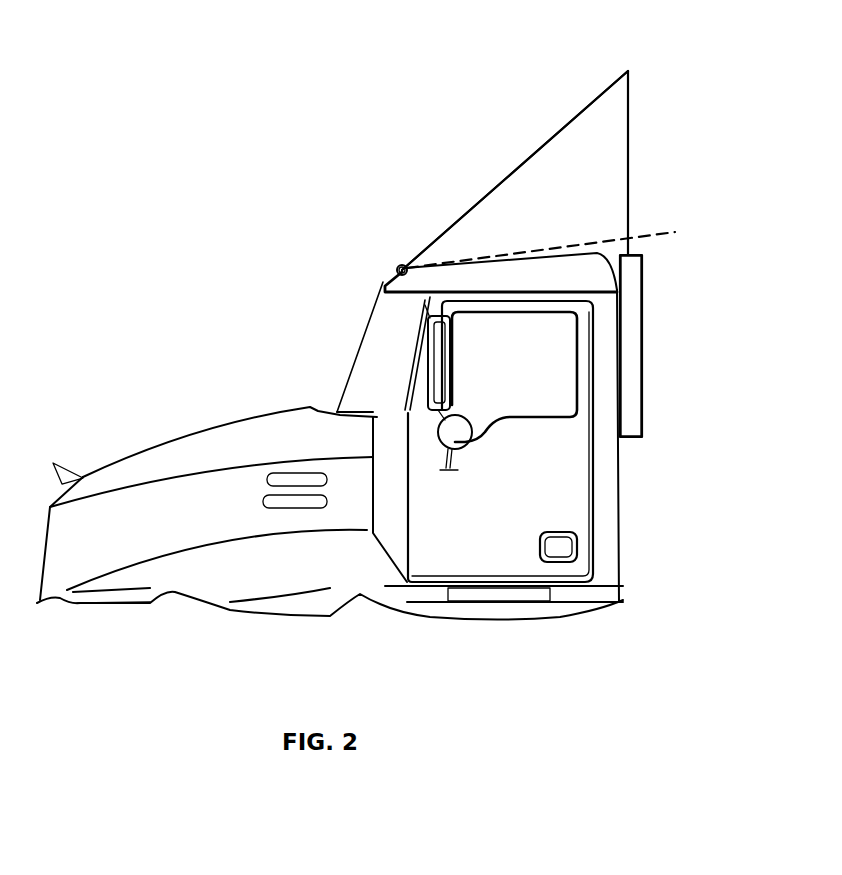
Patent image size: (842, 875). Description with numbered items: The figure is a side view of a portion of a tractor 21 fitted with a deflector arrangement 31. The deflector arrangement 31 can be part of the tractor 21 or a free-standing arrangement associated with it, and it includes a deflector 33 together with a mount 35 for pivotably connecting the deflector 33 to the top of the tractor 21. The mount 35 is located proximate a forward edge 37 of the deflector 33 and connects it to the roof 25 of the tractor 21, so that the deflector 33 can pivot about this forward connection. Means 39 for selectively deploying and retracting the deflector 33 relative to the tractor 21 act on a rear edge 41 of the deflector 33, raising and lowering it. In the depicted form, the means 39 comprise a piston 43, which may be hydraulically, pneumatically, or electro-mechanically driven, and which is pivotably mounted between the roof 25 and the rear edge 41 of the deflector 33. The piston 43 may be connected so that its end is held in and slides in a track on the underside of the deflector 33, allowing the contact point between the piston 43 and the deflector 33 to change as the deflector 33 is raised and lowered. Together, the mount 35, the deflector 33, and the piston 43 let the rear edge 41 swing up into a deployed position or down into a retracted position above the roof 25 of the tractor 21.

The tractor 21 is at (205, 433).
The roof 25 is at (584, 248).
The deflector arrangement 31 is at (478, 203).
The deflector 33 is at (563, 125).
The mount 35 is at (398, 266).
The forward edge 37 is at (411, 263).
The means for selectively deploying and retracting 39 is at (642, 327).
The rear edge 41 is at (627, 70).
The piston 43 is at (642, 268).